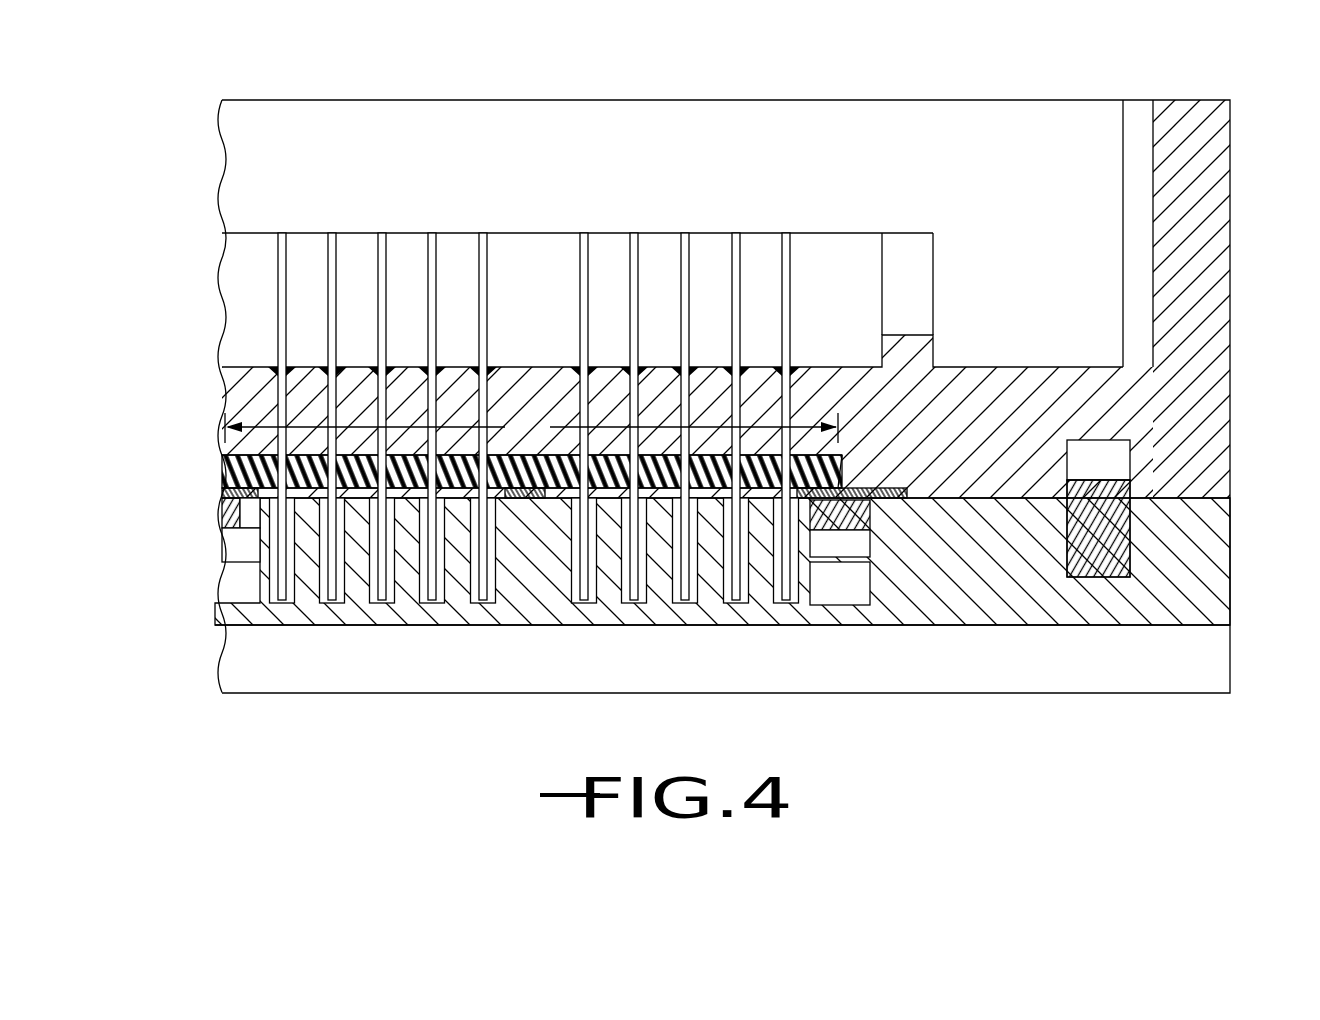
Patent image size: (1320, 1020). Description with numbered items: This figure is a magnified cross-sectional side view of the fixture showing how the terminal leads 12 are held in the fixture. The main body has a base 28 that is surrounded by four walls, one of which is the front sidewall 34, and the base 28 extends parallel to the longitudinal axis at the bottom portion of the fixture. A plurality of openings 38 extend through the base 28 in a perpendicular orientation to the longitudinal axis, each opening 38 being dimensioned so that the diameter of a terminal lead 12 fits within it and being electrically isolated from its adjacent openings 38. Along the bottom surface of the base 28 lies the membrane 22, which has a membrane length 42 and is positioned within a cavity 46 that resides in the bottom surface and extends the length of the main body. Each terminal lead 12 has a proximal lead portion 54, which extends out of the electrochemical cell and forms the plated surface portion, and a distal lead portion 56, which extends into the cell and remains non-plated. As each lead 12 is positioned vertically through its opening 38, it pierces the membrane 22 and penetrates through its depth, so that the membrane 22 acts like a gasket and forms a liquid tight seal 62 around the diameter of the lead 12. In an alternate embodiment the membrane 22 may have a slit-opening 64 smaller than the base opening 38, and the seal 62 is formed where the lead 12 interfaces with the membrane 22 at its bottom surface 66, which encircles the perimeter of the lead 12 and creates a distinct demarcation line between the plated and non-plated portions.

The terminal lead 12 is at (494, 253).
The membrane 22 is at (604, 494).
The base 28 is at (1035, 410).
The front sidewall 34 is at (1213, 208).
The opening 38 is at (486, 367).
The membrane length 42 is at (531, 428).
The cavity 46 is at (840, 470).
The proximal lead portion 54 is at (788, 567).
The distal lead portion 56 is at (793, 258).
The liquid tight seal 62 is at (676, 492).
The slit-opening 64 is at (337, 456).
The bottom surface 66 is at (354, 502).